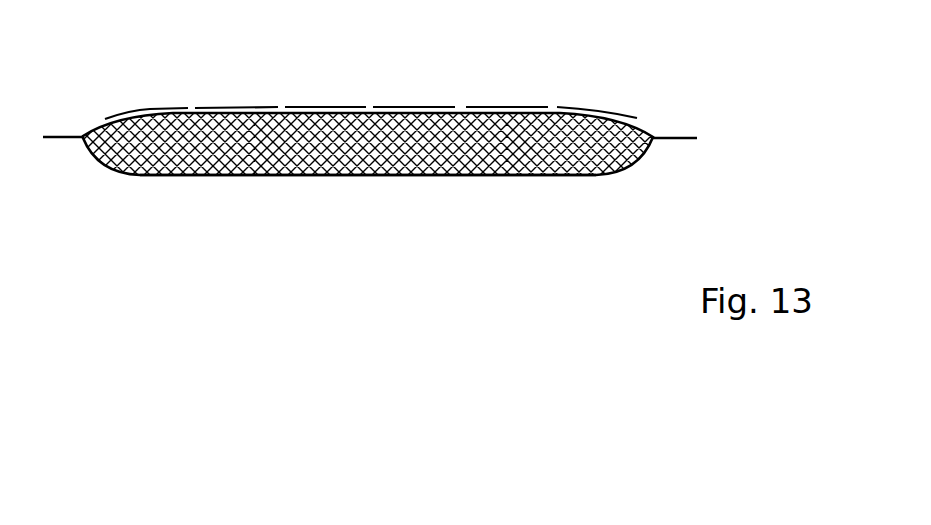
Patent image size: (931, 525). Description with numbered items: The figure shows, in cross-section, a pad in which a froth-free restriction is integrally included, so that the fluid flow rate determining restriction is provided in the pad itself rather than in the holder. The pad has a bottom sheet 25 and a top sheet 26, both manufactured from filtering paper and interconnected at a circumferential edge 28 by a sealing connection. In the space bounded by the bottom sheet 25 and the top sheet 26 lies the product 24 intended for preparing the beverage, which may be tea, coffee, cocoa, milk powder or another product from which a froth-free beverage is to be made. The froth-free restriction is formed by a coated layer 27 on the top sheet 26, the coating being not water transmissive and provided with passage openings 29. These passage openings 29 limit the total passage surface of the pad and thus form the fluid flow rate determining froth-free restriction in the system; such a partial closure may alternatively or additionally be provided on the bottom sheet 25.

The product 24 is at (369, 145).
The bottom sheet 25 is at (457, 175).
The top sheet 26 is at (551, 110).
The coated layer 27 is at (490, 107).
The circumferential edge 28 is at (681, 136).
The passage openings 29 is at (369, 108).